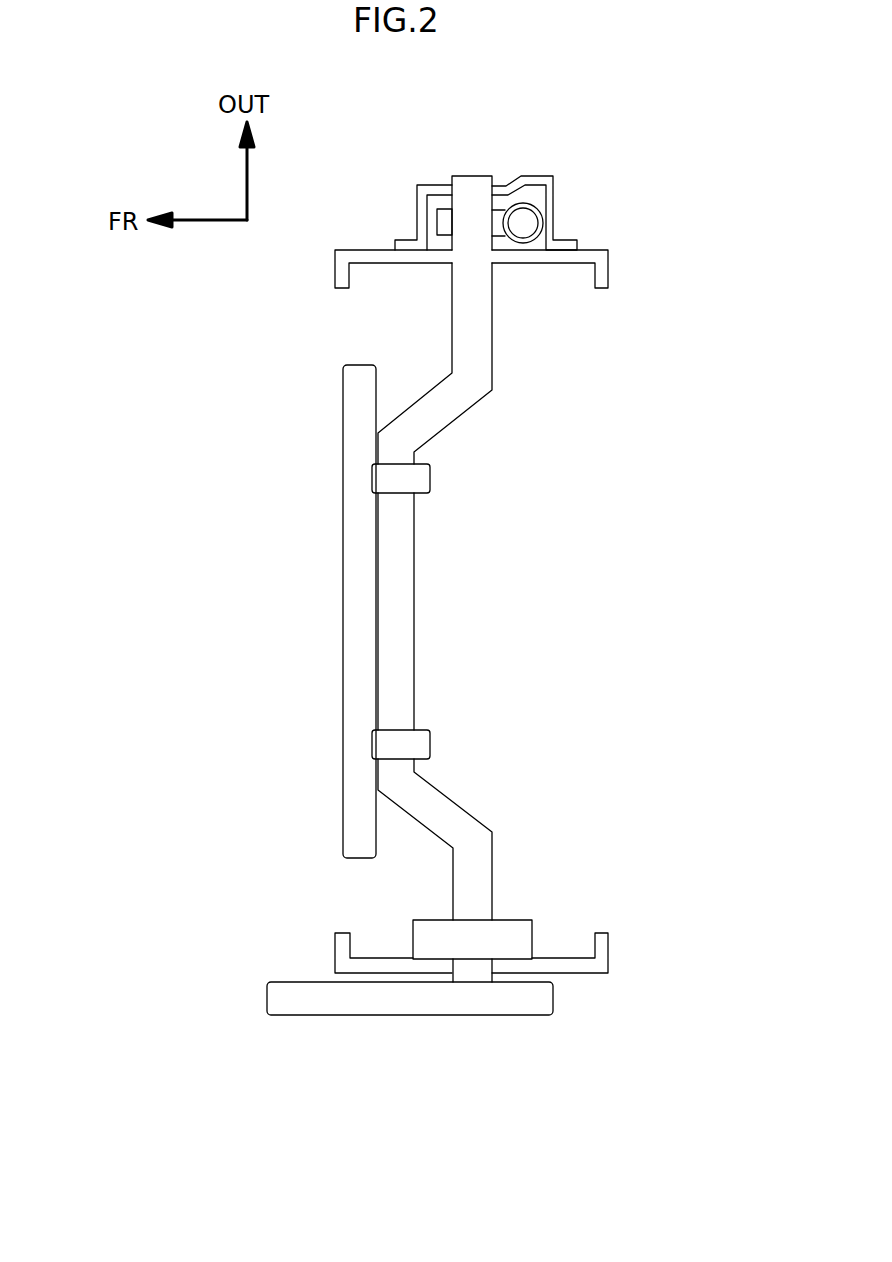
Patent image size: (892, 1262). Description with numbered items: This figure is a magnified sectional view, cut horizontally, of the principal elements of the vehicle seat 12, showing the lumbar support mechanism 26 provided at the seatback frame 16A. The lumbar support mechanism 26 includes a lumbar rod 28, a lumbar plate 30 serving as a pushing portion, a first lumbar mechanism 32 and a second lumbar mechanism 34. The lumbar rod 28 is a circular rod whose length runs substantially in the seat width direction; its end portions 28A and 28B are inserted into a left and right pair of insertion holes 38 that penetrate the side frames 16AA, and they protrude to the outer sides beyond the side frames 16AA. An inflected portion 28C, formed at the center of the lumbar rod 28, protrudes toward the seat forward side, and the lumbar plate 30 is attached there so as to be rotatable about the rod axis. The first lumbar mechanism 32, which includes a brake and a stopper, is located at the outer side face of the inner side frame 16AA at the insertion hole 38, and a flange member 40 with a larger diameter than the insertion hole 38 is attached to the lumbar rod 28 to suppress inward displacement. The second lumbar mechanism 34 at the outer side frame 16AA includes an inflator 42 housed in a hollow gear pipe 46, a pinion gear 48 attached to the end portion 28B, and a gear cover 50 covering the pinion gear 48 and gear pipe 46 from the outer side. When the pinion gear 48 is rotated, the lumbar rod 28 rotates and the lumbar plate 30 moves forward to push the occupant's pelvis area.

The vehicle seat 12 is at (220, 1062).
The seatback frame 16A is at (543, 621).
The side frame 16AA is at (600, 256).
The lumbar support mechanism 26 is at (643, 552).
The lumbar rod 28 is at (490, 593).
The end portion 28A is at (468, 977).
The end portion 28B is at (477, 176).
The inflected portion 28C is at (402, 625).
The lumbar plate 30 is at (352, 615).
The first lumbar mechanism 32 is at (517, 1007).
The second lumbar mechanism 34 is at (560, 171).
The insertion hole 38 is at (450, 548).
The flange member 40 is at (522, 942).
The inflator 42 is at (525, 220).
The gear pipe 46 is at (545, 222).
The pinion gear 48 is at (446, 213).
The gear cover 50 is at (424, 185).